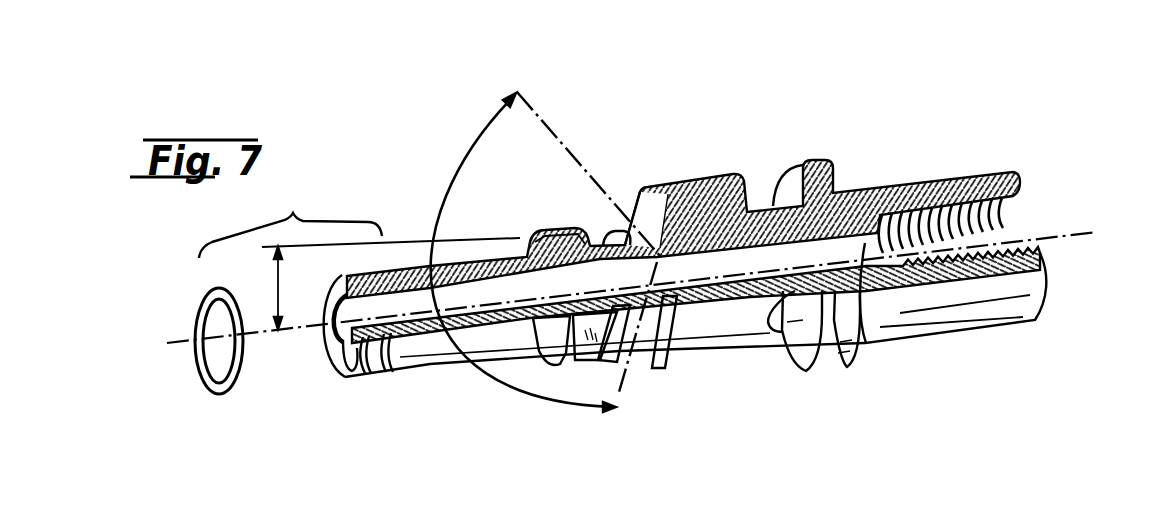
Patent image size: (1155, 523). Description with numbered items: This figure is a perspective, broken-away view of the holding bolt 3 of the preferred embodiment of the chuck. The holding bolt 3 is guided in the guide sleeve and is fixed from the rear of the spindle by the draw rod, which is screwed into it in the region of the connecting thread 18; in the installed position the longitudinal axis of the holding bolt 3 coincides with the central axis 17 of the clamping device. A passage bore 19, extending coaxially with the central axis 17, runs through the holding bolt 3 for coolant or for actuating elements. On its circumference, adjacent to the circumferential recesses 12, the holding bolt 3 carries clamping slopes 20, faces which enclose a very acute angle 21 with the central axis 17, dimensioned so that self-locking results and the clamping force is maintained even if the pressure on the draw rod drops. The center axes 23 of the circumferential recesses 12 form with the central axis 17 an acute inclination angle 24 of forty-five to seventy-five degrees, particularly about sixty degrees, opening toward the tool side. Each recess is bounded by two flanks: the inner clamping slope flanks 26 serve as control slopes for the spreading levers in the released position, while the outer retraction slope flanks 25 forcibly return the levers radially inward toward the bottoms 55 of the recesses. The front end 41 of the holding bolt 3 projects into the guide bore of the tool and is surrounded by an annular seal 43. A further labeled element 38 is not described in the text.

The holding bolt 3 is at (910, 345).
The circumferential recesses 12 is at (628, 213).
The central axis 17 is at (1095, 234).
The connecting thread 18 is at (1005, 226).
The passage bore 19 is at (342, 342).
The clamping slopes 20 is at (555, 231).
The acute angle 21 is at (277, 283).
The center axes of circumferential recesses 23 is at (528, 110).
The inclination angle 24 is at (457, 177).
The outer retraction slope flanks 25 is at (638, 191).
The inner clamping slope flanks 26 is at (600, 238).
The tube end 38 is at (340, 367).
The front end of holding bolt 41 is at (407, 360).
The annular seal 43 is at (213, 386).
The bottoms of the recesses 55 is at (646, 196).